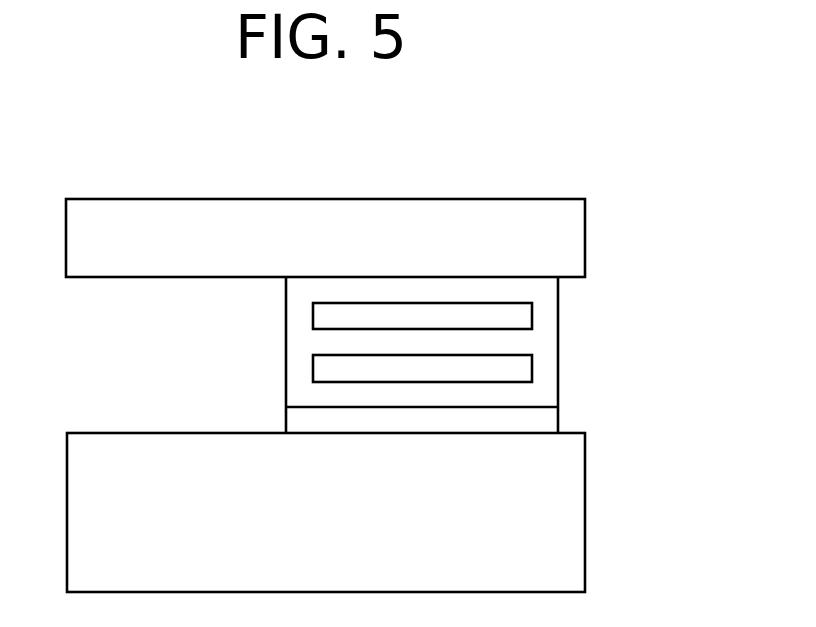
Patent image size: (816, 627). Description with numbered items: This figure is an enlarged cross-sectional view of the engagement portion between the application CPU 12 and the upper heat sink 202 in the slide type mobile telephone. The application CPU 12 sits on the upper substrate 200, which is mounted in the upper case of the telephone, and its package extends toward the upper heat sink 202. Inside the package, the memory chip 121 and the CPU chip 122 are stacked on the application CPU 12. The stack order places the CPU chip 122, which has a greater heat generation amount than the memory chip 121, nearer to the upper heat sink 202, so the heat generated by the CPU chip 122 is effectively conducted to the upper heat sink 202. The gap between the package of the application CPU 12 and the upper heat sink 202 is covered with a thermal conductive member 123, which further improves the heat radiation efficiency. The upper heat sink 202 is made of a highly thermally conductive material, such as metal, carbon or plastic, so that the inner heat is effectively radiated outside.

The upper substrate 200 is at (270, 199).
The upper heat sink 202 is at (585, 528).
The application CPU 12 is at (286, 363).
The memory chip 121 is at (522, 316).
The CPU chip 122 is at (522, 369).
The thermal conductive member 123 is at (558, 418).